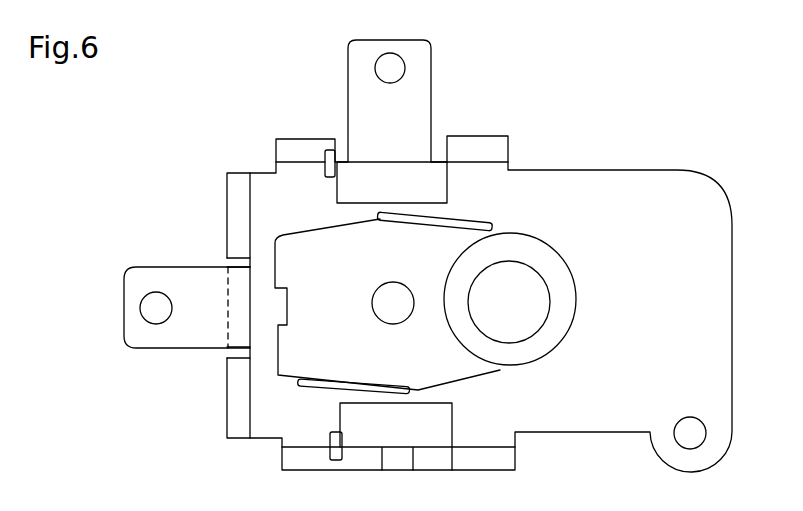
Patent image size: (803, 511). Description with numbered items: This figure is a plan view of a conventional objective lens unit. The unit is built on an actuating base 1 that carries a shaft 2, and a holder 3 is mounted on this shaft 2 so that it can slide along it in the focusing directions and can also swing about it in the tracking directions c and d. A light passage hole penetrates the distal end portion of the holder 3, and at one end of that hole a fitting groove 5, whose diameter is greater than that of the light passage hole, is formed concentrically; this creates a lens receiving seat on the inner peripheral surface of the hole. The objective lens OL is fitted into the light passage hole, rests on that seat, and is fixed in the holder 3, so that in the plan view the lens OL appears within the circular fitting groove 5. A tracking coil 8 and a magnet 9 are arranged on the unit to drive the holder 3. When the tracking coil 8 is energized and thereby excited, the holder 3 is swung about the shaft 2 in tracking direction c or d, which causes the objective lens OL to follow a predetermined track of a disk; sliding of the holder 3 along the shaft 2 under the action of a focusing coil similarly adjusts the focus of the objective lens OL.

The actuating base 1 is at (573, 198).
The shaft 2 is at (390, 304).
The holder 3 is at (447, 355).
The fitting groove 5 is at (517, 263).
The tracking coil 8 is at (463, 217).
The magnet 9 is at (357, 185).
The objective lens OL is at (520, 313).
The tracking direction c is at (588, 333).
The tracking direction d is at (592, 322).